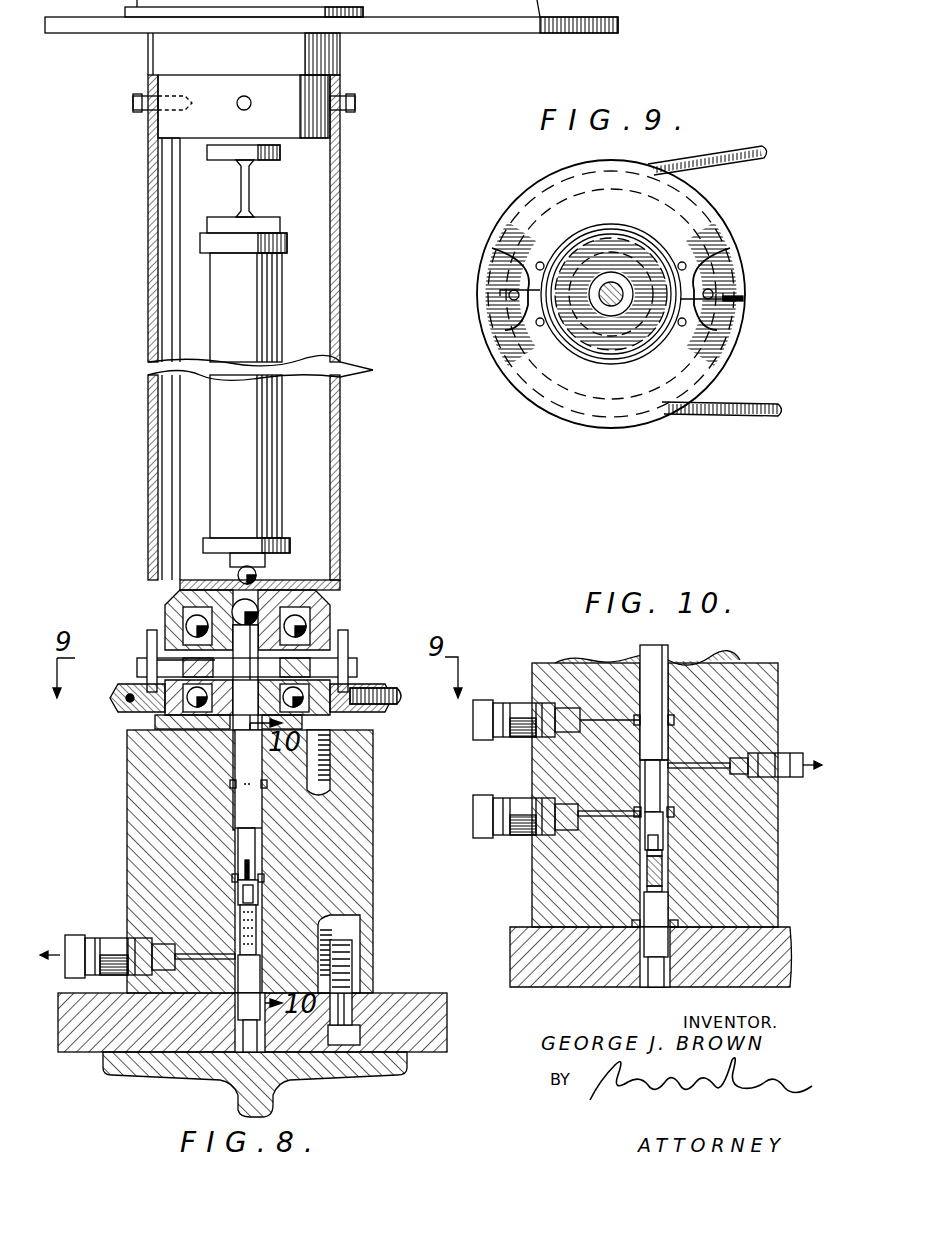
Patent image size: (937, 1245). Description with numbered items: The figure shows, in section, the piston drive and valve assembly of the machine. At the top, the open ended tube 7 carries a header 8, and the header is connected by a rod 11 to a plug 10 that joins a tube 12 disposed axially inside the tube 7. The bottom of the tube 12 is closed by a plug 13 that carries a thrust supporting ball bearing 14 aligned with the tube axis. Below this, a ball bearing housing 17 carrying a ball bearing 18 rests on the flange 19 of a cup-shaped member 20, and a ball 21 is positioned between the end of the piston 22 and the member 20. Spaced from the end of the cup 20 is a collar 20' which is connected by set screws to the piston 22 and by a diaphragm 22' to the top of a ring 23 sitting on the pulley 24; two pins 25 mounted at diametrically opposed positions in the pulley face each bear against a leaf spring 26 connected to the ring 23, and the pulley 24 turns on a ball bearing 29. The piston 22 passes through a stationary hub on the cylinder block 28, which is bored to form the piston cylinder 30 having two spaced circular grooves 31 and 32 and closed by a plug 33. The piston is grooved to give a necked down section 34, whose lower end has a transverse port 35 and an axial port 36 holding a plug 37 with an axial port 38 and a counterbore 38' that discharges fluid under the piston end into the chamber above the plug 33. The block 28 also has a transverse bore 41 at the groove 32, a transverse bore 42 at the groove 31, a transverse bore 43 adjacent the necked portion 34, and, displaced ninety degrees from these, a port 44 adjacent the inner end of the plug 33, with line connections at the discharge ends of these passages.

In FIG. 8, the open ended tube 7 is at (373, 370).
In FIG. 8, the header 8 is at (275, 80).
In FIG. 8, the plug 10 is at (287, 243).
In FIG. 8, the rod 11 is at (250, 190).
In FIG. 8, the tube 12 is at (282, 308).
In FIG. 8, the plug 13 is at (290, 538).
In FIG. 8, the thrust supporting ball bearing 14 is at (256, 573).
In FIG. 8, the ball bearing housing 17 is at (165, 604).
In FIG. 8, the ball bearing 18 is at (306, 626).
In FIG. 8, the flange 19 is at (178, 660).
In FIG. 8, the cup-shaped member 20 is at (309, 603).
In FIG. 9, the cup-shaped member 20 is at (611, 319).
In FIG. 8, the collar 20' is at (296, 689).
In FIG. 8, the ball 21 is at (300, 590).
In FIG. 8, the piston 22 is at (212, 727).
In FIG. 9, the piston 22 is at (637, 263).
In FIG. 10, the piston 22 is at (682, 692).
In FIG. 8, the diaphragm 22' is at (222, 737).
In FIG. 9, the diaphragm 22' is at (611, 276).
In FIG. 8, the ring 23 is at (140, 700).
In FIG. 9, the ring 23 is at (680, 255).
In FIG. 8, the pulley 24 is at (375, 704).
In FIG. 9, the pulley 24 is at (743, 299).
In FIG. 8, the pin 25 is at (152, 632).
In FIG. 9, the pin 25 is at (713, 290).
In FIG. 8, the leaf spring 26 is at (137, 665).
In FIG. 9, the leaf spring 26 is at (525, 285).
In FIG. 8, the cylinder block 28 is at (373, 830).
In FIG. 10, the cylinder block 28 is at (765, 663).
In FIG. 8, the ball bearing 29 is at (340, 712).
In FIG. 8, the piston cylinder 30 is at (258, 900).
In FIG. 10, the piston cylinder 30 is at (663, 836).
In FIG. 8, the circular groove 31 is at (232, 878).
In FIG. 10, the circular groove 31 is at (674, 812).
In FIG. 8, the circular groove 32 is at (230, 784).
In FIG. 10, the circular groove 32 is at (674, 720).
In FIG. 8, the plug 33 is at (250, 970).
In FIG. 10, the plug 33 is at (660, 906).
In FIG. 8, the necked down section 34 is at (240, 845).
In FIG. 10, the necked down section 34 is at (648, 768).
In FIG. 8, the transverse port 35 is at (250, 878).
In FIG. 10, the transverse port 35 is at (650, 825).
In FIG. 8, the axial port 36 is at (243, 896).
In FIG. 10, the axial port 36 is at (650, 845).
In FIG. 8, the plug 37 is at (258, 925).
In FIG. 10, the plug 37 is at (662, 872).
In FIG. 10, the axial port 38 is at (626, 870).
In FIG. 10, the counterbore 38' is at (628, 890).
In FIG. 8, the transverse bore 41 is at (240, 796).
In FIG. 10, the transverse bore 41 is at (595, 718).
In FIG. 10, the transverse bore 42 is at (612, 808).
In FIG. 10, the transverse bore 43 is at (698, 765).
In FIG. 8, the port 44 is at (195, 956).